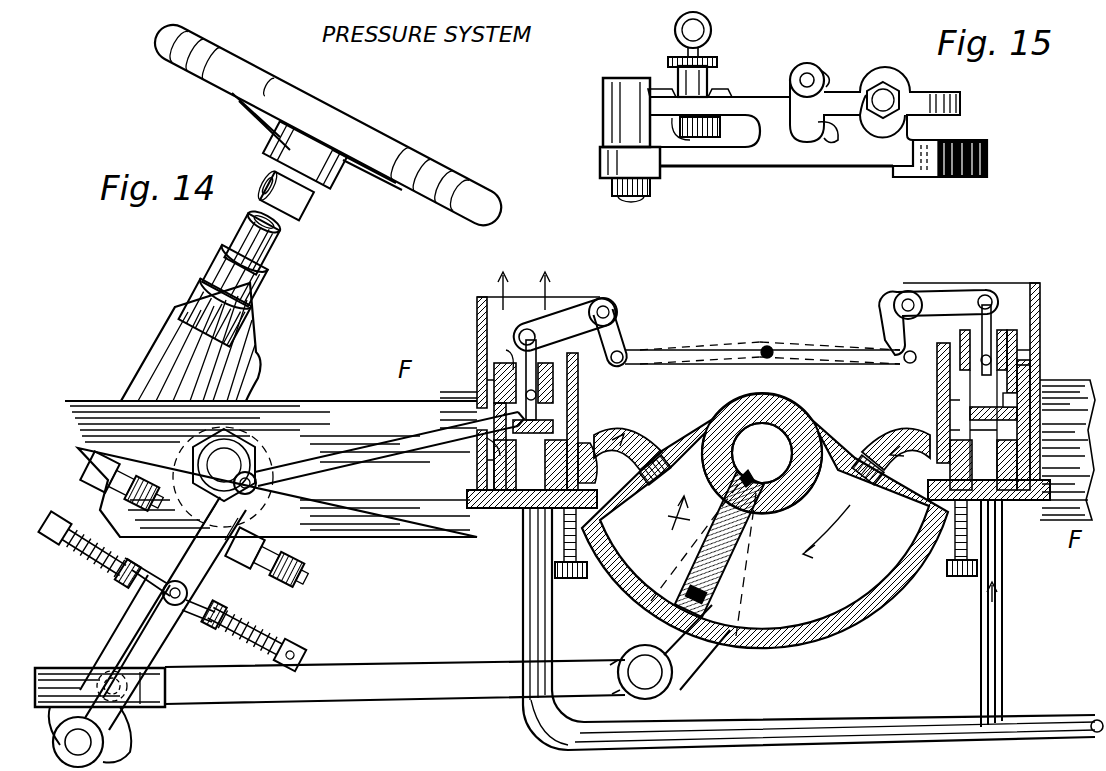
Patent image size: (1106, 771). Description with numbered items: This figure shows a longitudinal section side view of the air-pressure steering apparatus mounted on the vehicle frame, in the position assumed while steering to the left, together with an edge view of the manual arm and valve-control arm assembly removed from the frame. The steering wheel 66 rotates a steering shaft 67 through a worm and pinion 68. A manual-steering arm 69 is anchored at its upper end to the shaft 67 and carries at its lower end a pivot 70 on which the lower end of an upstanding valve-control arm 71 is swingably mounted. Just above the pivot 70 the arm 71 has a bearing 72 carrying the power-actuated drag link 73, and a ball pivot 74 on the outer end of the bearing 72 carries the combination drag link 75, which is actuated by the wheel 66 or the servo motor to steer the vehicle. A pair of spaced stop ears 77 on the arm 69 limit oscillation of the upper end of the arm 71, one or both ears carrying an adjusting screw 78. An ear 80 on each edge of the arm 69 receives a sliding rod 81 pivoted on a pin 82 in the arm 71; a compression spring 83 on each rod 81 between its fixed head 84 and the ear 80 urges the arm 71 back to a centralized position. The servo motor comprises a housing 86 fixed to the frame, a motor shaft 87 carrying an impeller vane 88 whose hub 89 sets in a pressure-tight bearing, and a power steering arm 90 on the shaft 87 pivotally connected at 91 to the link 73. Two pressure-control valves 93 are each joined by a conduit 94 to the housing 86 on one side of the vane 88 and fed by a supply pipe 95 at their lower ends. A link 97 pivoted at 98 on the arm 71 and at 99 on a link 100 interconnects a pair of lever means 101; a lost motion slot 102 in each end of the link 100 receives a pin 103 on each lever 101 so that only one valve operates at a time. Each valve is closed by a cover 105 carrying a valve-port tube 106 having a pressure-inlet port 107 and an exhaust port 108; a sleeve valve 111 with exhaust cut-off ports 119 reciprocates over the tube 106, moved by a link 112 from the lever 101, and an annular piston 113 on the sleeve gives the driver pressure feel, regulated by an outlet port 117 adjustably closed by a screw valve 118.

In FIG. 14, the steering wheel 66 is at (440, 198).
In FIG. 14, the steering shaft 67 is at (282, 257).
In FIG. 14, the worm and pinion 68 is at (258, 412).
In FIG. 14, the manual-steering arm 69 is at (105, 632).
In FIG. 15, the manual-steering arm 69 is at (758, 165).
In FIG. 14, the pivot 70 is at (66, 745).
In FIG. 15, the pivot 70 is at (603, 135).
In FIG. 14, the valve-control arm 71 is at (198, 541).
In FIG. 15, the valve-control arm 71 is at (770, 108).
In FIG. 14, the bearing 72 is at (118, 725).
In FIG. 15, the bearing 72 is at (710, 78).
In FIG. 14, the power-actuated drag link 73 is at (406, 663).
In FIG. 14, the ball pivot 74 is at (150, 708).
In FIG. 15, the ball pivot 74 is at (682, 32).
In FIG. 14, the combination drag link 75 is at (45, 703).
In FIG. 14, the stop ears 77 is at (170, 470).
In FIG. 15, the stop ears 77 is at (912, 128).
In FIG. 14, the adjusting screw 78 is at (90, 474).
In FIG. 15, the adjusting screw 78 is at (886, 90).
In FIG. 14, the ear 80 is at (112, 583).
In FIG. 15, the ear 80 is at (838, 146).
In FIG. 14, the rods 81 is at (48, 520).
In FIG. 15, the rods 81 is at (806, 63).
In FIG. 14, the pin 82 is at (173, 603).
In FIG. 14, the compression spring 83 is at (78, 565).
In FIG. 14, the fixed head 84 is at (62, 548).
In FIG. 15, the fixed head 84 is at (822, 82).
In FIG. 14, the servo motor housing 86 is at (870, 605).
In FIG. 14, the motor shaft 87 is at (792, 425).
In FIG. 14, the impeller vane 88 is at (738, 572).
In FIG. 14, the hub 89 is at (790, 472).
In FIG. 14, the power steering arm 90 is at (698, 650).
In FIG. 14, the pivotal connection 91 is at (672, 690).
In FIG. 14, the pressure-control valve 93 is at (477, 312).
In FIG. 14, the conduit 94 is at (640, 445).
In FIG. 14, the fluid-pressure supply pipe 95 is at (526, 603).
In FIG. 14, the link 97 is at (402, 450).
In FIG. 14, the pivot 98 is at (262, 457).
In FIG. 14, the pivot 99 is at (766, 346).
In FIG. 14, the link 100 is at (825, 347).
In FIG. 14, the lever means 101 is at (578, 300).
In FIG. 14, the lost motion slot 102 is at (645, 352).
In FIG. 14, the pin 103 is at (622, 345).
In FIG. 14, the cover 105 is at (500, 520).
In FIG. 14, the valve-port tube 106 is at (494, 383).
In FIG. 14, the pressure-inlet port 107 is at (1017, 430).
In FIG. 14, the exhaust port 108 is at (1017, 403).
In FIG. 14, the sleeve valve 111 is at (500, 356).
In FIG. 14, the link 112 is at (996, 322).
In FIG. 14, the annular piston 113 is at (494, 470).
In FIG. 14, the outlet port 117 is at (900, 505).
In FIG. 14, the screw valve 118 is at (572, 580).
In FIG. 14, the exhaust cut-off ports 119 is at (1040, 376).